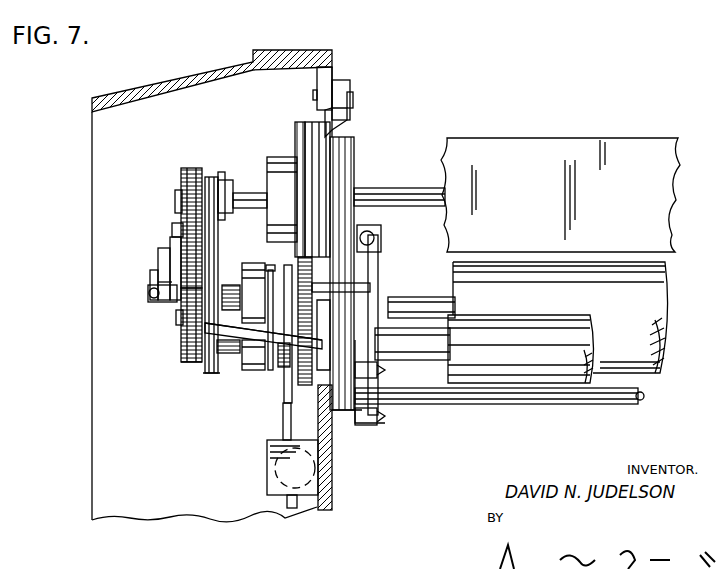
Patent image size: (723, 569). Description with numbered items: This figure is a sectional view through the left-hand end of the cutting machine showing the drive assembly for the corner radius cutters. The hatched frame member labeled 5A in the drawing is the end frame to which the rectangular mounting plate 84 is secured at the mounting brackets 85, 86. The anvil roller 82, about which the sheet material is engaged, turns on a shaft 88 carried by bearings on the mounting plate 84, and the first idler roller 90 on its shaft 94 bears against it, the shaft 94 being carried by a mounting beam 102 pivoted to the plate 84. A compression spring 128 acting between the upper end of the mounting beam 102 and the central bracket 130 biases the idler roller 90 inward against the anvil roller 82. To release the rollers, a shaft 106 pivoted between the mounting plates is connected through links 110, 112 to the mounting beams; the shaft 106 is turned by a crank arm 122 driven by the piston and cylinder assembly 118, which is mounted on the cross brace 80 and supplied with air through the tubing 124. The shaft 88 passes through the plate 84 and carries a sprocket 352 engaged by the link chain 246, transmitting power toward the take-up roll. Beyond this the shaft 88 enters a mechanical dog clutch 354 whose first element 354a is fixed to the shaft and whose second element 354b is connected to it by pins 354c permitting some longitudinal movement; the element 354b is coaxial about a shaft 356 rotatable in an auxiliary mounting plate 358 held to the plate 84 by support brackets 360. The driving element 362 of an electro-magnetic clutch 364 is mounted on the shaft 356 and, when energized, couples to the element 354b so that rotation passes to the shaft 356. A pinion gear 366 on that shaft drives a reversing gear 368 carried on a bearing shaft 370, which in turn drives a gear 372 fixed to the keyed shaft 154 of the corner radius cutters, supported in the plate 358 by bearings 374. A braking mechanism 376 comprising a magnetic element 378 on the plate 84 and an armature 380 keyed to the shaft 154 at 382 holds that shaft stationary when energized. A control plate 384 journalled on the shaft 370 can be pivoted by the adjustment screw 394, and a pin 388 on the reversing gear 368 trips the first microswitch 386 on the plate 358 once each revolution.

The housing 5A is at (197, 76).
The cross brace 80 is at (330, 507).
The anvil roller 82 is at (655, 297).
The rectangular mounting plate 84 is at (350, 157).
The mounting bracket 85 is at (347, 88).
The mounting bracket 86 is at (327, 75).
The shaft 88 is at (432, 310).
The idler roller 90 is at (578, 323).
The shaft 94 is at (440, 347).
The mounting beam 102 is at (372, 267).
The shaft 106 is at (628, 405).
The link 110 is at (387, 373).
The link 112 is at (388, 425).
The piston and cylinder assembly 118 is at (312, 485).
The crank arm 122 is at (277, 433).
The tubing 124 is at (293, 508).
The compression spring 128 is at (377, 242).
The central bracket 130 is at (380, 230).
The keyed shaft 154 is at (427, 197).
The link chain 246 is at (312, 287).
The sprocket 352 is at (328, 418).
The mechanical dog clutch 354 is at (303, 247).
The first element 354a is at (288, 377).
The second element 354b is at (272, 272).
The pins 354c is at (283, 367).
The shaft 356 is at (177, 320).
The auxiliary mounting plate 358 is at (207, 180).
The support bracket 360 is at (193, 332).
The driving element 362 is at (242, 355).
The electro-magnetic clutch 364 is at (237, 367).
The pinion gear 366 is at (187, 360).
The reversing gear 368 is at (178, 238).
The bearing shaft 370 is at (158, 253).
The gear 372 is at (192, 168).
The bearings 374 is at (222, 177).
The braking mechanism 376 is at (306, 104).
The magnetic element 378 is at (327, 123).
The armature 380 is at (297, 125).
The key 382 is at (263, 192).
The corner radius cutter control plate 384 is at (167, 282).
The first corner cutter microswitch 386 is at (177, 193).
The pin 388 is at (177, 230).
The adjustment screw 394 is at (152, 295).